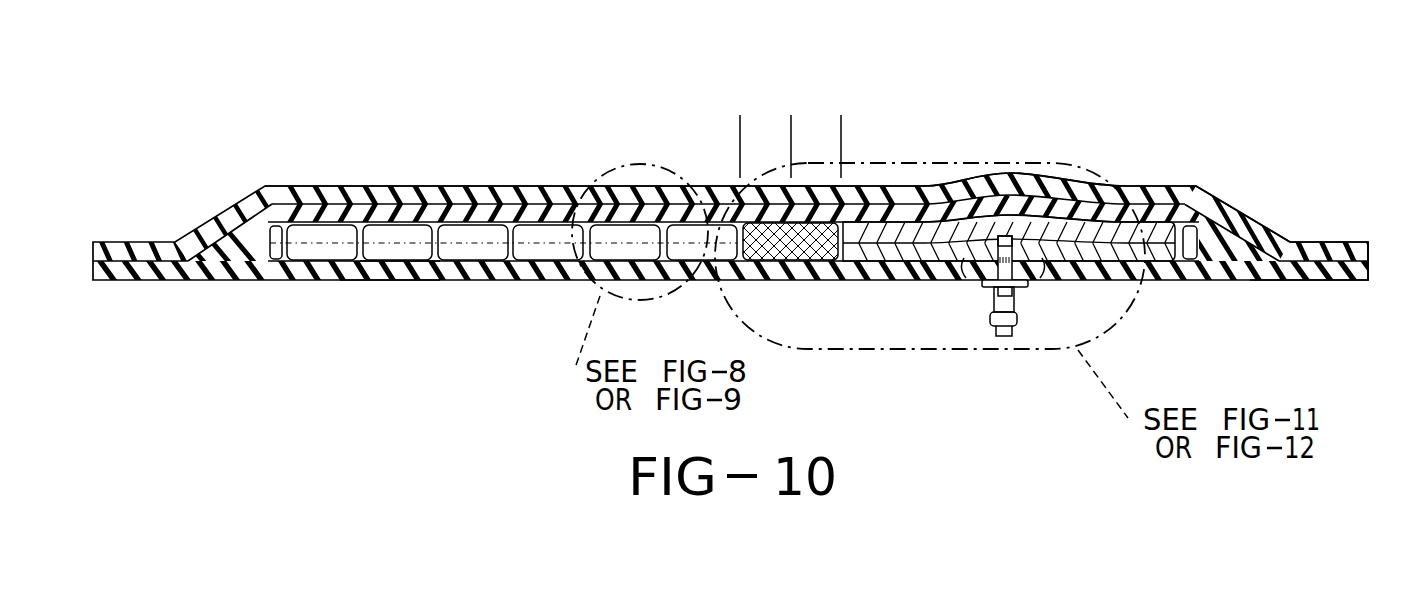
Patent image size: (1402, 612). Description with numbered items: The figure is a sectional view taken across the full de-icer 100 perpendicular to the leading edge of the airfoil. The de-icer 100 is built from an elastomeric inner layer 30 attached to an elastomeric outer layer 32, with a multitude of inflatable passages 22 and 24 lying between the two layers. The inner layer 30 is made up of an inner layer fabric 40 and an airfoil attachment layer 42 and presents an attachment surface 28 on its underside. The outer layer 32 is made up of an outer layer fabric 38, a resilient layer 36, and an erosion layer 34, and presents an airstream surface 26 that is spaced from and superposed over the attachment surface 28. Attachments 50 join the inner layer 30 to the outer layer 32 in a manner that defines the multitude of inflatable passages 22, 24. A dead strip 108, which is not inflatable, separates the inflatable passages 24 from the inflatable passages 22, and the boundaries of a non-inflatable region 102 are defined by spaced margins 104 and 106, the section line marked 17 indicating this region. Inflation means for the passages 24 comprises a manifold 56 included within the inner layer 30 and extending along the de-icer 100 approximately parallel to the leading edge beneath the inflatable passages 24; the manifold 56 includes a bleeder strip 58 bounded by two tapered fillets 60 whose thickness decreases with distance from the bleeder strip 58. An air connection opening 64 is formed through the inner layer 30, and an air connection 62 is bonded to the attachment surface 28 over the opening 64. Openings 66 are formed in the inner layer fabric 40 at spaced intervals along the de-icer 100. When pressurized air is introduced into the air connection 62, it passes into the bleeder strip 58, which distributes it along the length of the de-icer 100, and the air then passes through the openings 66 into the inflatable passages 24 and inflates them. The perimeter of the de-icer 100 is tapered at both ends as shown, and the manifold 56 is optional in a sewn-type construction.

The de-icer 100 is at (1143, 122).
The inflatable passages 22 is at (300, 240).
The inflatable passages 24 is at (885, 243).
The airstream surface 26 is at (1182, 186).
The attachment surface 28 is at (1255, 281).
The elastomeric inner layer 30 is at (483, 293).
The elastomeric outer layer 32 is at (425, 125).
The erosion layer 34 is at (312, 196).
The resilient layer 36 is at (362, 222).
The outer layer fabric 38 is at (412, 222).
The inner layer fabric 40 is at (400, 261).
The airfoil attachment layer 42 is at (372, 265).
The attachments 50 is at (505, 238).
The manifold 56 is at (988, 280).
The bleeder strip 58 is at (1014, 248).
The tapered fillets 60 is at (968, 270).
The air connection 62 is at (996, 337).
The air connection opening 64 is at (1016, 300).
The openings 66 is at (1004, 236).
The non-inflatable region 102 is at (800, 186).
The spaced margin 104 is at (841, 131).
The spaced margin 106 is at (740, 133).
The dead strip 108 is at (795, 235).
The section line 17 is at (791, 131).